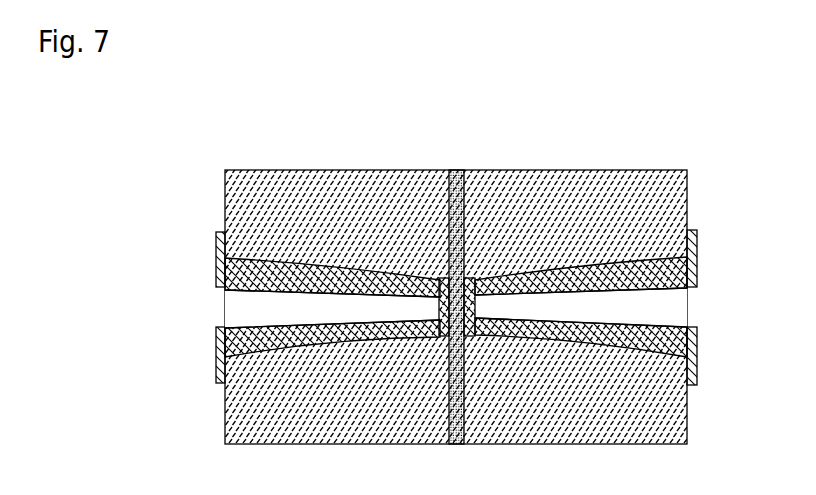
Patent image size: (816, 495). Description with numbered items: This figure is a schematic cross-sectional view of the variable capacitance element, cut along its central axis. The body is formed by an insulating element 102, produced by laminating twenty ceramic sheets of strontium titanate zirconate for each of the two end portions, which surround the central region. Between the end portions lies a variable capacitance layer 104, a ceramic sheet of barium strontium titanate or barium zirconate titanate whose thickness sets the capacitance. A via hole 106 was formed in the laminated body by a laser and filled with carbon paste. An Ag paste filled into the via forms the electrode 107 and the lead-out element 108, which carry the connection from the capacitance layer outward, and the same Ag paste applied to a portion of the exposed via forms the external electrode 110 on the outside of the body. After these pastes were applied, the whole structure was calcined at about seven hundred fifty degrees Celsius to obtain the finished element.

The insulating element 102 is at (325, 182).
The variable capacitance layer 104 is at (462, 170).
The via hole 106 is at (678, 310).
The electrode 107 is at (470, 278).
The lead-out element 108 is at (687, 272).
The external electrode 110 is at (687, 362).